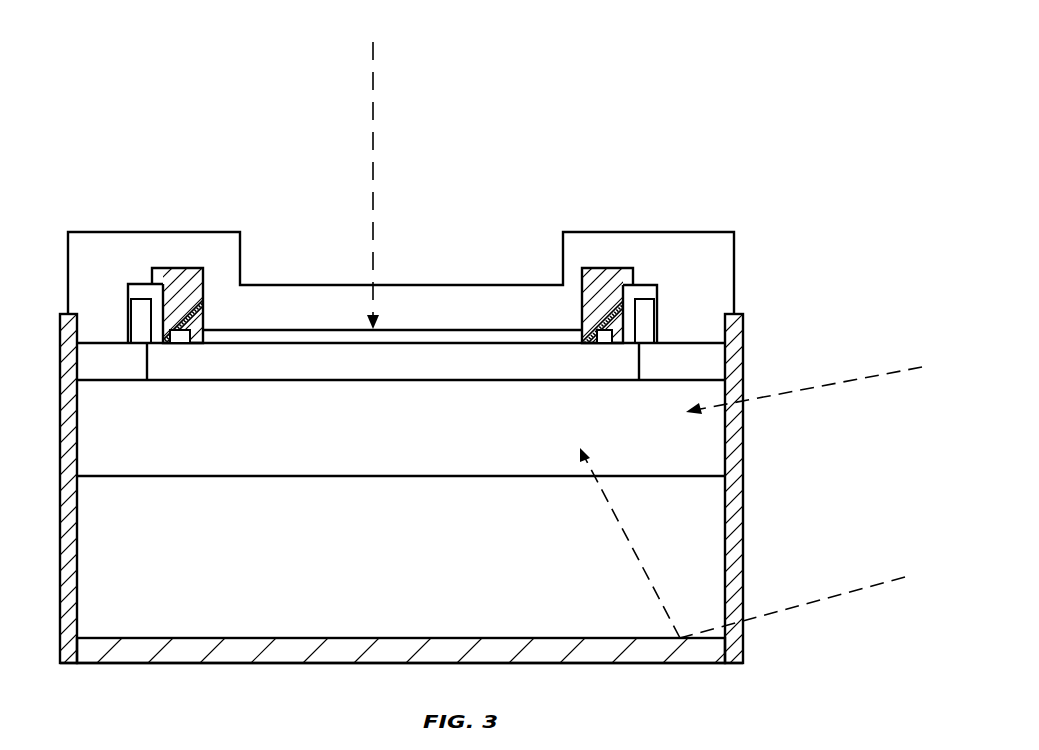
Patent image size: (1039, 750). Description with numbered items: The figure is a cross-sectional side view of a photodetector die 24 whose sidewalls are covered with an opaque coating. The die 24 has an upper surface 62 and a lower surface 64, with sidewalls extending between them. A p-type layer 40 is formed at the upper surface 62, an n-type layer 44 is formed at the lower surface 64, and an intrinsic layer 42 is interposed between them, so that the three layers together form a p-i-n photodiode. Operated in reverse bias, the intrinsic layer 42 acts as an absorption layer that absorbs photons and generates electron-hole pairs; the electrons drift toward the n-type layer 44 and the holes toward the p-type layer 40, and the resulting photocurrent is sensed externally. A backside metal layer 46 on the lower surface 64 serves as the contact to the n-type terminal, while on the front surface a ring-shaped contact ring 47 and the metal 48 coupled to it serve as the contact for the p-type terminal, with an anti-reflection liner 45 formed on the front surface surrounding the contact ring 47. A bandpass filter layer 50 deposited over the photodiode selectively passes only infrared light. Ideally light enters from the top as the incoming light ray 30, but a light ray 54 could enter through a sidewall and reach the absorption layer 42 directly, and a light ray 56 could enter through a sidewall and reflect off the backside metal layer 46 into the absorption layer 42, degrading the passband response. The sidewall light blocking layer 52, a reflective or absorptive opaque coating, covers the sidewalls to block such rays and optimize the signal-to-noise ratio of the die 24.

The photodetector die 24 is at (672, 64).
The incoming light ray 30 is at (374, 82).
The p-type layer 40 is at (520, 372).
The intrinsic layer 42 is at (708, 438).
The n-type layer 44 is at (708, 551).
The anti-reflection liner 45 is at (128, 292).
The backside metal layer 46 is at (643, 648).
The contact ring 47 is at (180, 330).
The metal 48 is at (165, 278).
The bandpass filter layer 50 is at (497, 296).
The sidewall light blocking layer 52 is at (68, 421).
The light ray 54 is at (867, 377).
The light ray 56 is at (626, 537).
The upper surface 62 is at (696, 343).
The lower surface 64 is at (136, 639).